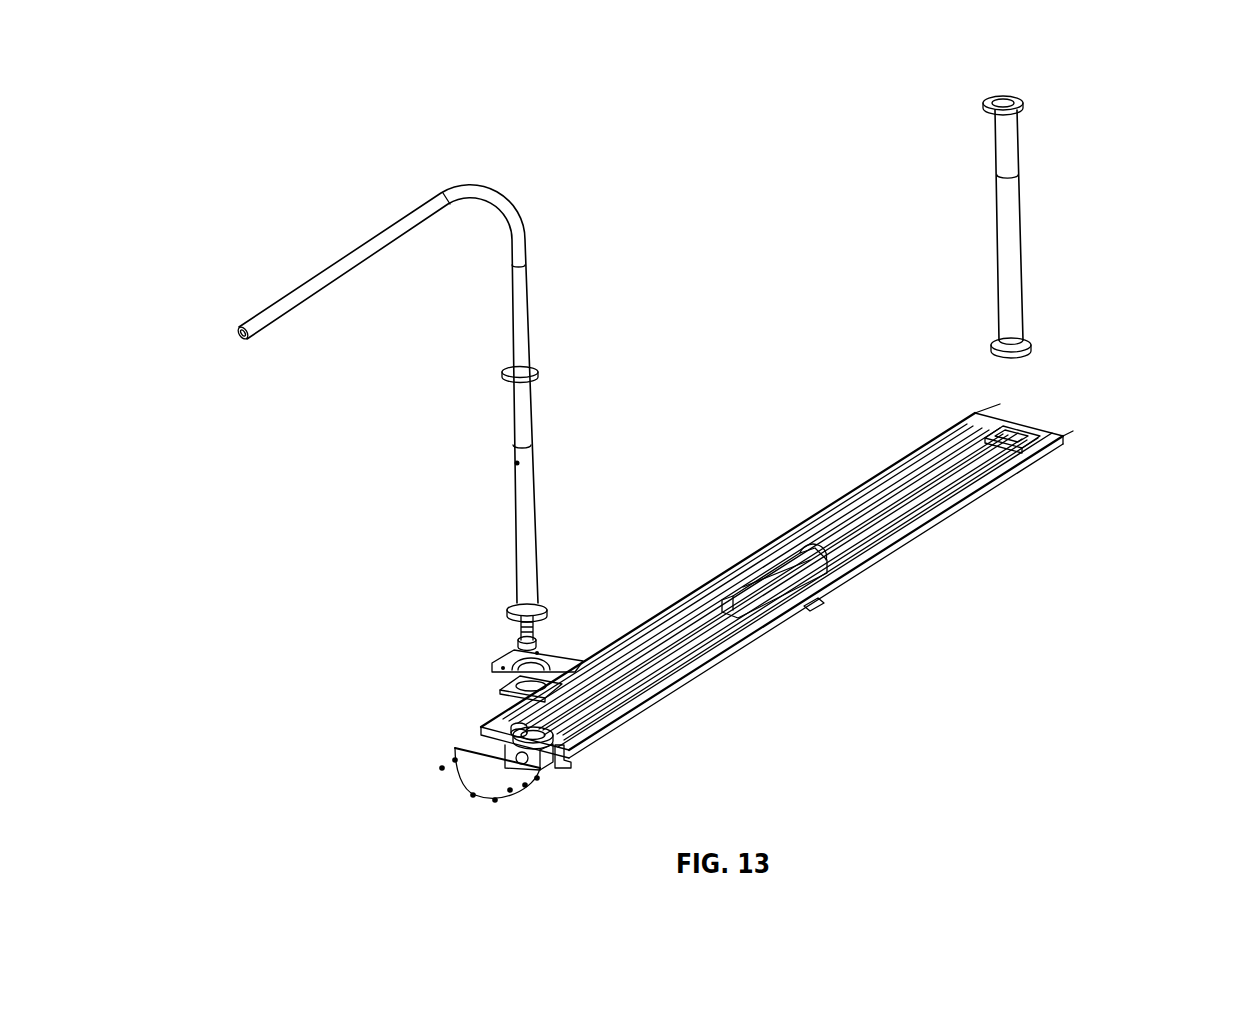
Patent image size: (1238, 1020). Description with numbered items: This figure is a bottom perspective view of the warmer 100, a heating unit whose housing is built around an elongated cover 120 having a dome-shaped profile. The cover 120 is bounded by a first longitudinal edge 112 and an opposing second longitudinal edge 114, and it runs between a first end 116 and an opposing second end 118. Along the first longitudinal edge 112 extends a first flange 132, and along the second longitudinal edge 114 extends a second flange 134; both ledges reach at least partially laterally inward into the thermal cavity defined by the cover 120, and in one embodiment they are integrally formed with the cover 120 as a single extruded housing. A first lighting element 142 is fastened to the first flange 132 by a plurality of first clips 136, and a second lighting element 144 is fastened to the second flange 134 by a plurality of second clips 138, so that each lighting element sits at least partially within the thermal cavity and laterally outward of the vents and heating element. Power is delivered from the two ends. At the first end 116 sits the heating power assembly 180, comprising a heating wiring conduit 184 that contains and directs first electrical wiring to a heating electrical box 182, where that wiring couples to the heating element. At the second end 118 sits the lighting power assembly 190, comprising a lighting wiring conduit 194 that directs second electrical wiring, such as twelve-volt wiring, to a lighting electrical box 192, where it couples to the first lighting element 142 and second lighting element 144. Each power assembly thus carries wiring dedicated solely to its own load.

The warmer 100 is at (215, 110).
The first longitudinal edge 112 is at (762, 512).
The second longitudinal edge 114 is at (855, 606).
The first end 116 is at (367, 752).
The second end 118 is at (1087, 365).
The cover 120 is at (553, 772).
The first flange 132 is at (500, 742).
The second flange 134 is at (560, 764).
The first clips 136 is at (747, 580).
The second clips 138 is at (815, 608).
The first lighting element 142 is at (678, 615).
The second lighting element 144 is at (658, 690).
The heating power assembly 180 is at (470, 646).
The heating electrical box 182 is at (510, 730).
The heating wiring conduit 184 is at (522, 485).
The lighting power assembly 190 is at (1043, 315).
The lighting electrical box 192 is at (1024, 422).
The lighting wiring conduit 194 is at (1010, 255).